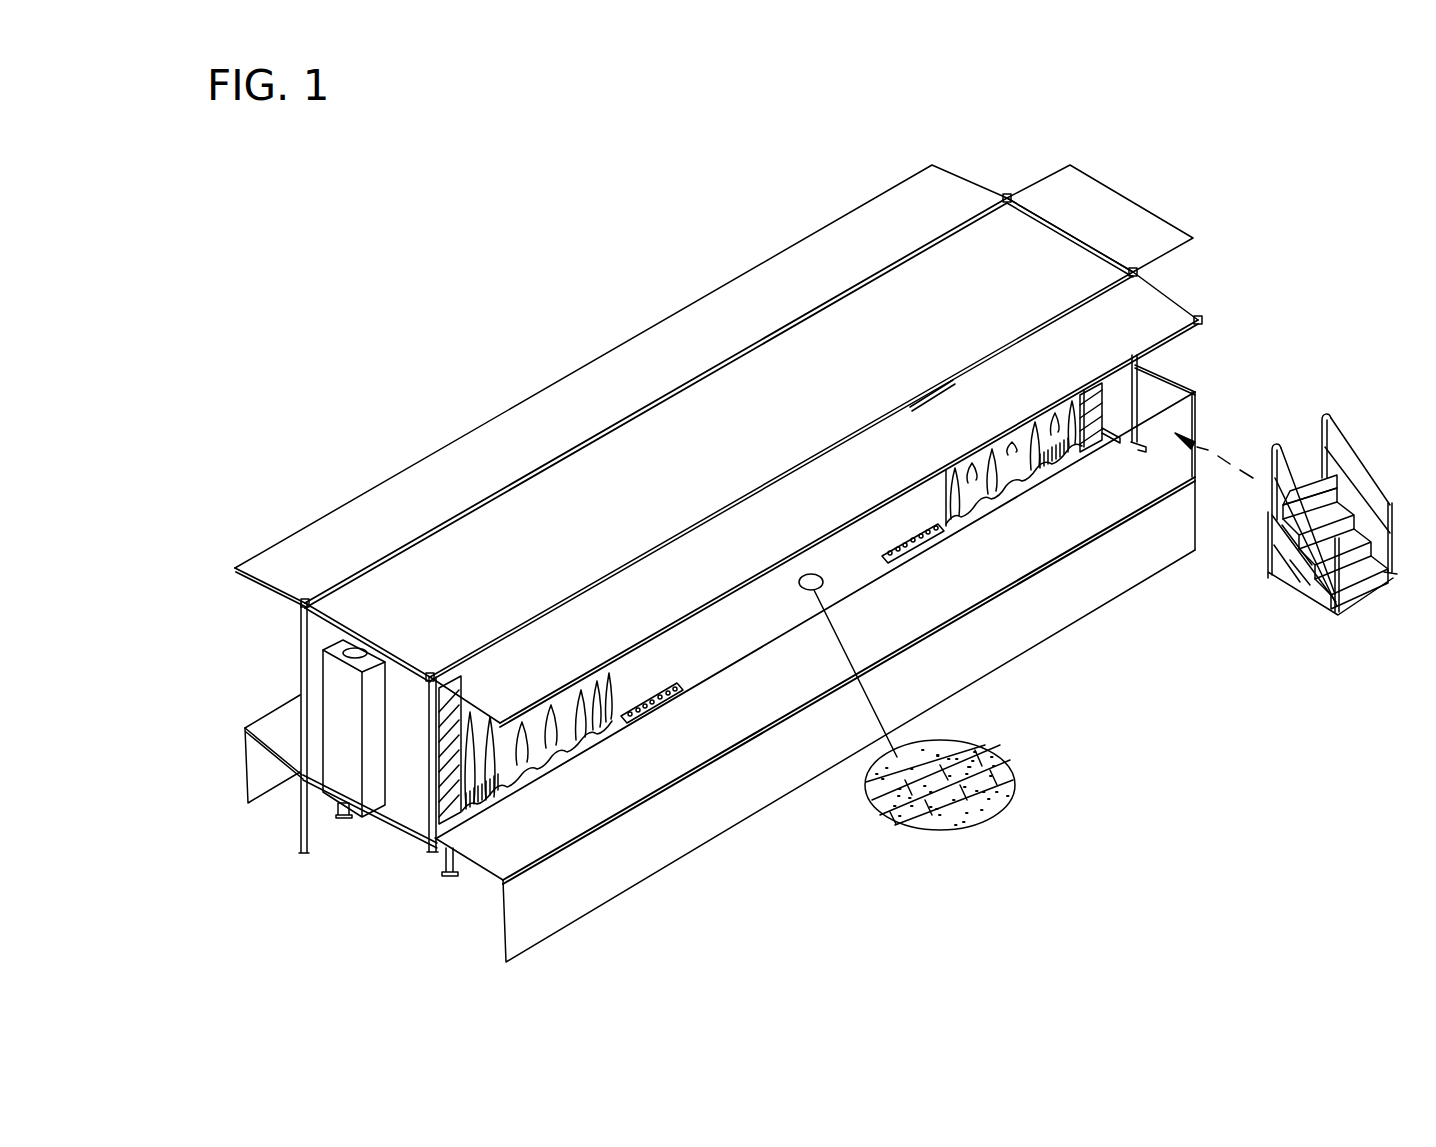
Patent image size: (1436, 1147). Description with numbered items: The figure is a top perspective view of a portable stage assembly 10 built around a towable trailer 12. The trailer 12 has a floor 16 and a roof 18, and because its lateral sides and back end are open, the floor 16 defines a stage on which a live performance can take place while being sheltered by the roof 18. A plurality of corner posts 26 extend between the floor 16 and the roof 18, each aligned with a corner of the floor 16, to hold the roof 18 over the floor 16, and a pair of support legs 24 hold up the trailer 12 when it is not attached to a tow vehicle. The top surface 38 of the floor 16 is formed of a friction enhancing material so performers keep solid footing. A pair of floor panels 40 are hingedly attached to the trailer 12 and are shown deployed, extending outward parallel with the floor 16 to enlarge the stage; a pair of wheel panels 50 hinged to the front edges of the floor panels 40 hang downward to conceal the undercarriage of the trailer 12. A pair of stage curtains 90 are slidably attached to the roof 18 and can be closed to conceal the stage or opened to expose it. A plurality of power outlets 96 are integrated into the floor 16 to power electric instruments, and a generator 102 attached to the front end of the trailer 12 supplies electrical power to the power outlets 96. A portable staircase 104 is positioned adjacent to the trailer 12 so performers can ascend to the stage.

The portable stage assembly 10 is at (752, 178).
The trailer 12 is at (423, 853).
The floor 16 is at (701, 648).
The roof 18 is at (497, 560).
The support legs 24 is at (334, 807).
The corner posts 26 is at (302, 649).
The top surface 38 is at (870, 530).
The floor panels 40 is at (273, 724).
The wheel panels 50 is at (244, 800).
The stage curtains 90 is at (513, 797).
The power outlets 96 is at (690, 712).
The generator 102 is at (332, 650).
The portable staircase 104 is at (1320, 607).